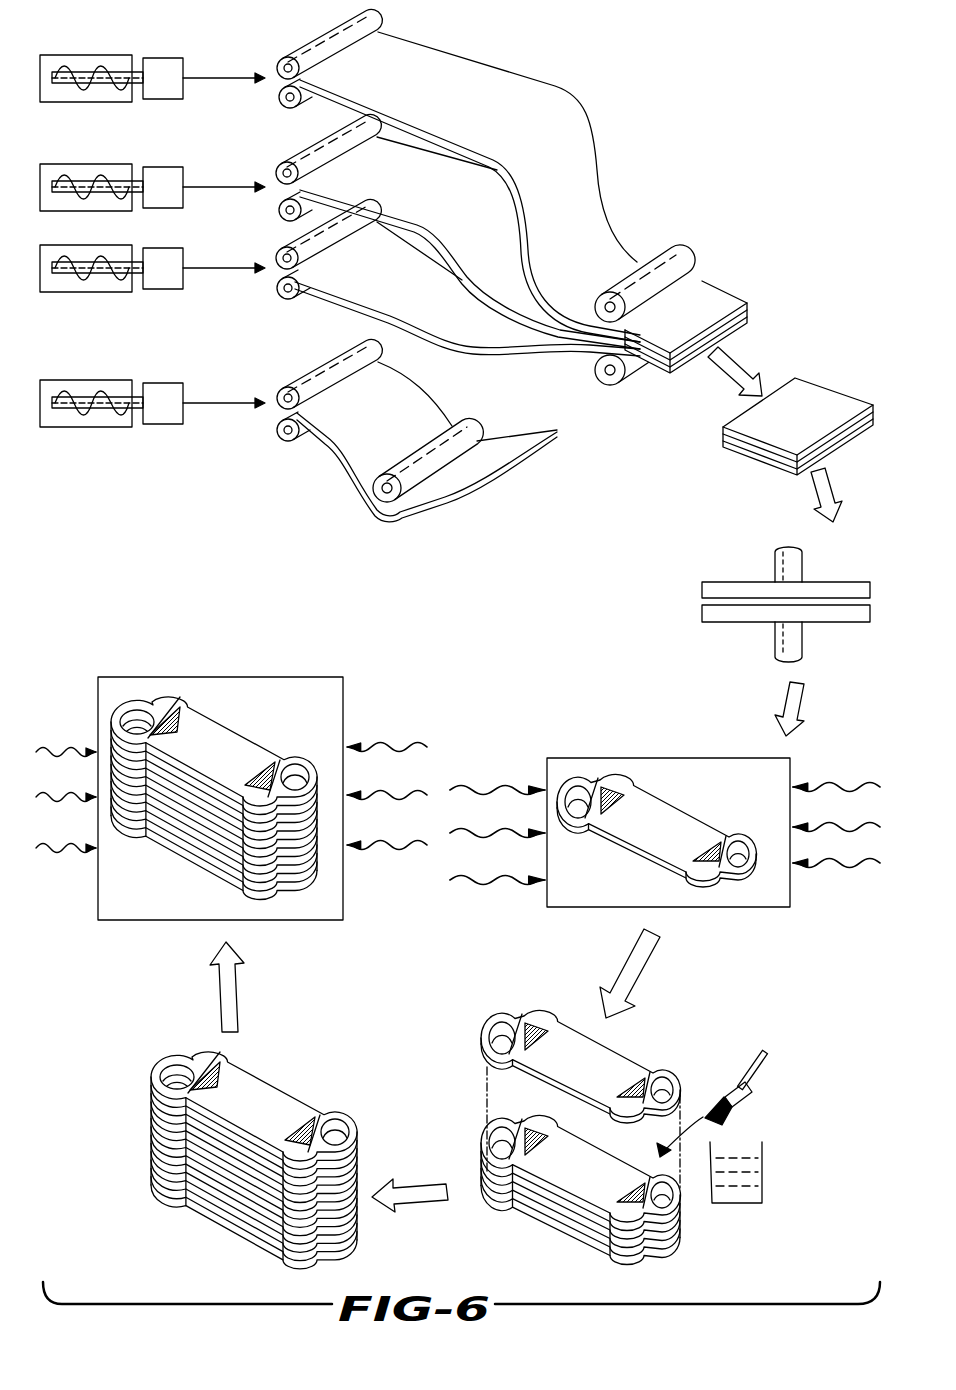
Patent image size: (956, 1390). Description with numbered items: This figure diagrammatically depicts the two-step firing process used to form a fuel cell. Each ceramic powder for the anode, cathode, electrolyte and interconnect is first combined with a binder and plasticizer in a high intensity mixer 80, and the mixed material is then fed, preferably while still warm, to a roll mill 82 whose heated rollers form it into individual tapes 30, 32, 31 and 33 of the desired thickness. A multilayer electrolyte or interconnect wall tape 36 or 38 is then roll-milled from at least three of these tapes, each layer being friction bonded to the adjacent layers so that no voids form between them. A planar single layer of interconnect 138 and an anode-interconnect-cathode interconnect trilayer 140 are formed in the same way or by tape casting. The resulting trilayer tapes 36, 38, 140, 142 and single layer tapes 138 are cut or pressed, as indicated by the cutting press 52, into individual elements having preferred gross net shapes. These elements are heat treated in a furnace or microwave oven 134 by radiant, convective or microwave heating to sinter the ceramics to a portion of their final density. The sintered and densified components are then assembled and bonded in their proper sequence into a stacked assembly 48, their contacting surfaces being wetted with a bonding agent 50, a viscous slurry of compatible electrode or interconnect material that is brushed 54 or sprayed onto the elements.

The high intensity mixer 80 is at (93, 55).
The roll mill 82 is at (318, 45).
The anode tape 30 is at (470, 187).
The electrolyte tape 31 is at (470, 243).
The cathode tape 32 is at (467, 289).
The interconnect tape 33 is at (427, 442).
The multilayer electrolyte wall tape 36 is at (720, 315).
The multilayer interconnect wall tape 38 is at (716, 302).
The cutting press 52 is at (826, 581).
The furnace or microwave oven 134 is at (305, 677).
The planar single layer of interconnect 138 is at (632, 797).
The interconnect trilayer 140 is at (632, 797).
The trilayer tape 142 is at (647, 813).
The brush 54 is at (748, 1104).
The bonding agent 50 is at (762, 1182).
The stacked assembly 48 is at (240, 1205).